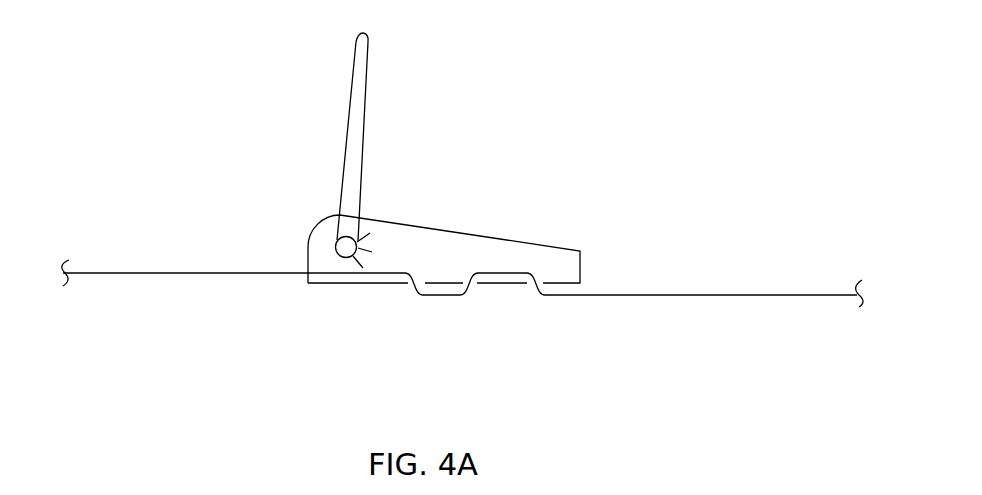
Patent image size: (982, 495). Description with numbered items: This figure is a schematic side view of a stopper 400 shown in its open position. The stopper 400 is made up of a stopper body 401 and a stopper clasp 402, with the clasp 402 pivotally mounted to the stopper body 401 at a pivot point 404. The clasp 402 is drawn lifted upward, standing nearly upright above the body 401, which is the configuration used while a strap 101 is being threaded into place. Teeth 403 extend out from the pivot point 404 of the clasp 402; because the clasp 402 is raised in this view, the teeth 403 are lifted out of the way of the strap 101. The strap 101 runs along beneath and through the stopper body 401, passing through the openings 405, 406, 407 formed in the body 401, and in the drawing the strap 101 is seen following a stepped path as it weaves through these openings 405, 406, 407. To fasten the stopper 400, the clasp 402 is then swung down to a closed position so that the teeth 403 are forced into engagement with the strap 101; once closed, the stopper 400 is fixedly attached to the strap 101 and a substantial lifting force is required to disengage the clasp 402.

The strap 101 is at (160, 273).
The stopper 400 is at (316, 210).
The stopper body 401 is at (555, 258).
The stopper clasp 402 is at (357, 105).
The teeth 403 is at (369, 226).
The pivot point 404 is at (339, 246).
The opening 405 is at (412, 283).
The opening 406 is at (477, 283).
The opening 407 is at (530, 283).